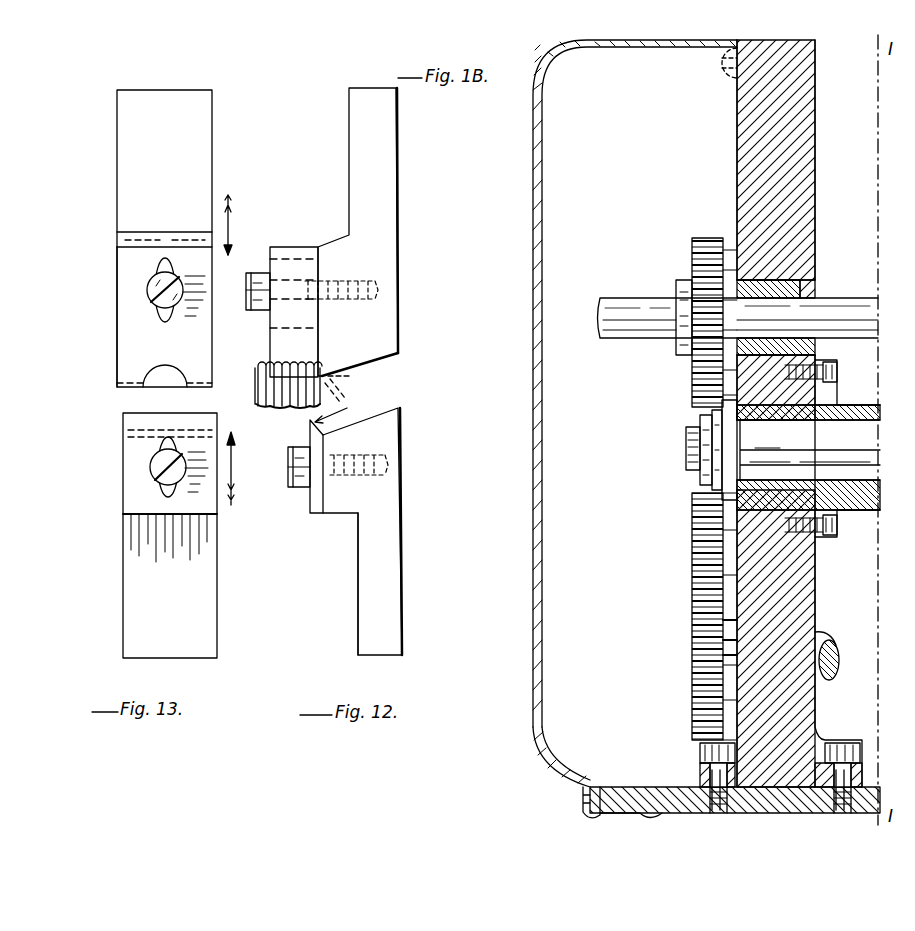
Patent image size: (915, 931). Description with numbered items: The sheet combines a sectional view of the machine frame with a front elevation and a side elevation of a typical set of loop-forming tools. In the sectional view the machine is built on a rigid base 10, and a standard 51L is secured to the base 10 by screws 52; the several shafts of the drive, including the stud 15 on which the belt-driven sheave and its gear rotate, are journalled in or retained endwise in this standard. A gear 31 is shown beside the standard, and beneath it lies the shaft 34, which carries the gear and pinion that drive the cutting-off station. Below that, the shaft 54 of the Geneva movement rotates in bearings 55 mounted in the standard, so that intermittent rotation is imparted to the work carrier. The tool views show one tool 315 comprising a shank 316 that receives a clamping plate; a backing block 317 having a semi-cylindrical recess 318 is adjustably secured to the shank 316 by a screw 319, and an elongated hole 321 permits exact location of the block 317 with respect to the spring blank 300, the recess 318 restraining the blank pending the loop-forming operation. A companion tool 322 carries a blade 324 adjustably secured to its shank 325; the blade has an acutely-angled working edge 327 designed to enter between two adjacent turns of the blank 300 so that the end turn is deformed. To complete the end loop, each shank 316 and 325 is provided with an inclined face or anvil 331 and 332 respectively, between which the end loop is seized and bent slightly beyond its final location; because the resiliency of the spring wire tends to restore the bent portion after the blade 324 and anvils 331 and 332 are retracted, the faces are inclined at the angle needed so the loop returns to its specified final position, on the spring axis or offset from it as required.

In FIG. 13, the shank 316 is at (205, 152).
In FIG. 12, the shank 316 is at (383, 165).
In FIG. 13, the tool 315 is at (113, 227).
In FIG. 12, the tool 315 is at (405, 262).
In FIG. 13, the backing block 317 is at (130, 278).
In FIG. 12, the backing block 317 is at (300, 247).
In FIG. 13, the elongated hole 321 is at (156, 322).
In FIG. 13, the screw 319 is at (182, 303).
In FIG. 12, the screw 319 is at (258, 273).
In FIG. 13, the semi-cylindrical recess 318 is at (143, 392).
In FIG. 13, the companion tool 322 is at (229, 584).
In FIG. 12, the companion tool 322 is at (400, 563).
In FIG. 13, the blade 324 is at (135, 495).
In FIG. 12, the blade 324 is at (312, 500).
In FIG. 13, the shank 325 is at (190, 628).
In FIG. 12, the shank 325 is at (385, 600).
In FIG. 12, the inclined face or anvil 331 is at (392, 358).
In FIG. 12, the working edge 327 is at (352, 399).
In FIG. 12, the inclined face or anvil 332 is at (392, 410).
In FIG. 12, the spring blank 300 is at (258, 407).
In FIG. 1B, the gear 31 is at (696, 259).
In FIG. 1B, the shaft 34 is at (852, 305).
In FIG. 1B, the shaft 54 is at (855, 410).
In FIG. 1B, the bearings 55 is at (832, 505).
In FIG. 1B, the standard 51L is at (805, 590).
In FIG. 1B, the stud 15 is at (858, 625).
In FIG. 1B, the screws 52 is at (840, 743).
In FIG. 1B, the base 10 is at (872, 790).